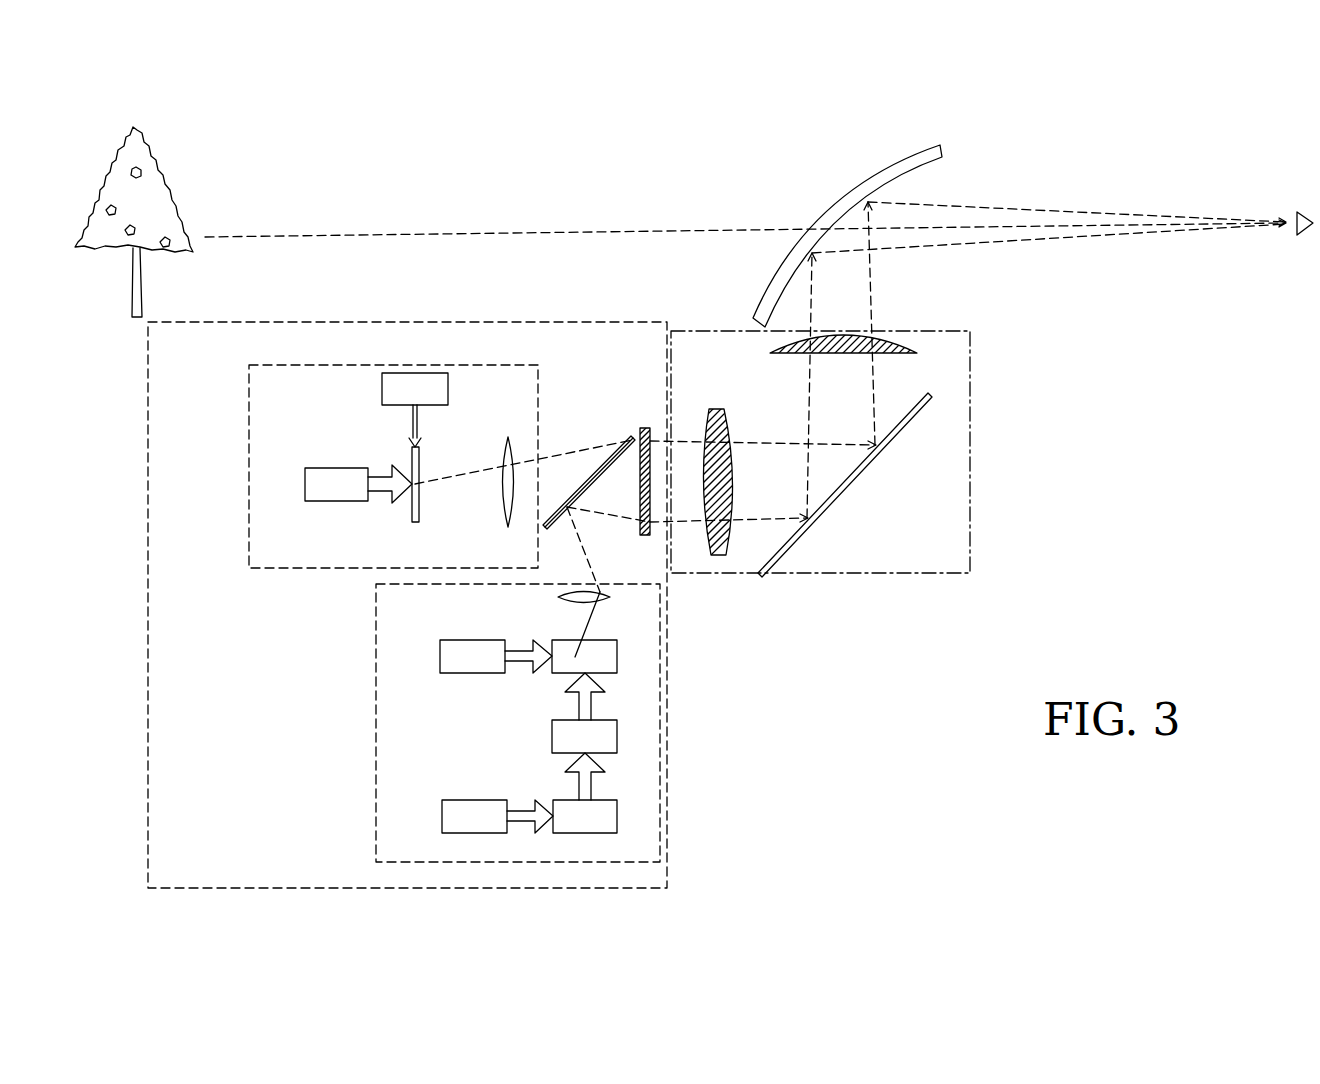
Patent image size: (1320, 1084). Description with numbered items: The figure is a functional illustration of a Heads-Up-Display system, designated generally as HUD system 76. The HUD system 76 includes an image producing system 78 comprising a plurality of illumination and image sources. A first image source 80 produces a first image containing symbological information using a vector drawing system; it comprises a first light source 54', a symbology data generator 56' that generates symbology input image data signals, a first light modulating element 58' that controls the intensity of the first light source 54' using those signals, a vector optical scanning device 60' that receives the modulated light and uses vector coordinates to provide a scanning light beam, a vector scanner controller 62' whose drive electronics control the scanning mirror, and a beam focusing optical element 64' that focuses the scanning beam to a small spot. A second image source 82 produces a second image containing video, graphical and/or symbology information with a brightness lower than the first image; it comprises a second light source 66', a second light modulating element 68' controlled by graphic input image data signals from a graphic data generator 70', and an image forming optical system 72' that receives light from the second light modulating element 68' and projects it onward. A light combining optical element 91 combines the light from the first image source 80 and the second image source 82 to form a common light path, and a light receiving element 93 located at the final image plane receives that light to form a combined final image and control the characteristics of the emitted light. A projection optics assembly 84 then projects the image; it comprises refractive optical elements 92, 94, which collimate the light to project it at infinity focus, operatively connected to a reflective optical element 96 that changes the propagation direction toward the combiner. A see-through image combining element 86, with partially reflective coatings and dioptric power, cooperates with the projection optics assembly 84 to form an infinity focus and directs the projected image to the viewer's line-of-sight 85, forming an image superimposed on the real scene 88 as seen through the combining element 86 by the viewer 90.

The HUD system 76 is at (793, 693).
The image producing system 78 is at (148, 695).
The first image source 80 is at (375, 760).
The second image source 82 is at (291, 574).
The projection optics assembly 84 is at (888, 573).
The viewer's line-of-sight 85 is at (485, 234).
The see-through image combining element 86 is at (848, 203).
The real scene 88 is at (160, 172).
The viewer 90 is at (1306, 237).
The light combining optical element 91 is at (598, 468).
The refractive optical element 92 is at (716, 408).
The light receiving element 93 is at (640, 428).
The refractive optical element 94 is at (785, 355).
The reflective optical element 96 is at (880, 455).
The first light source 54' is at (639, 713).
The symbology data generator 56' is at (490, 795).
The first light modulating element 58' is at (639, 793).
The vector optical scanning device 60' is at (639, 656).
The vector scanner controller 62' is at (492, 687).
The beam focusing optical element 64' is at (537, 582).
The second light source 66' is at (358, 513).
The second light modulating element 68' is at (447, 504).
The graphic data generator 70' is at (367, 410).
The image forming optical system 72' is at (524, 453).